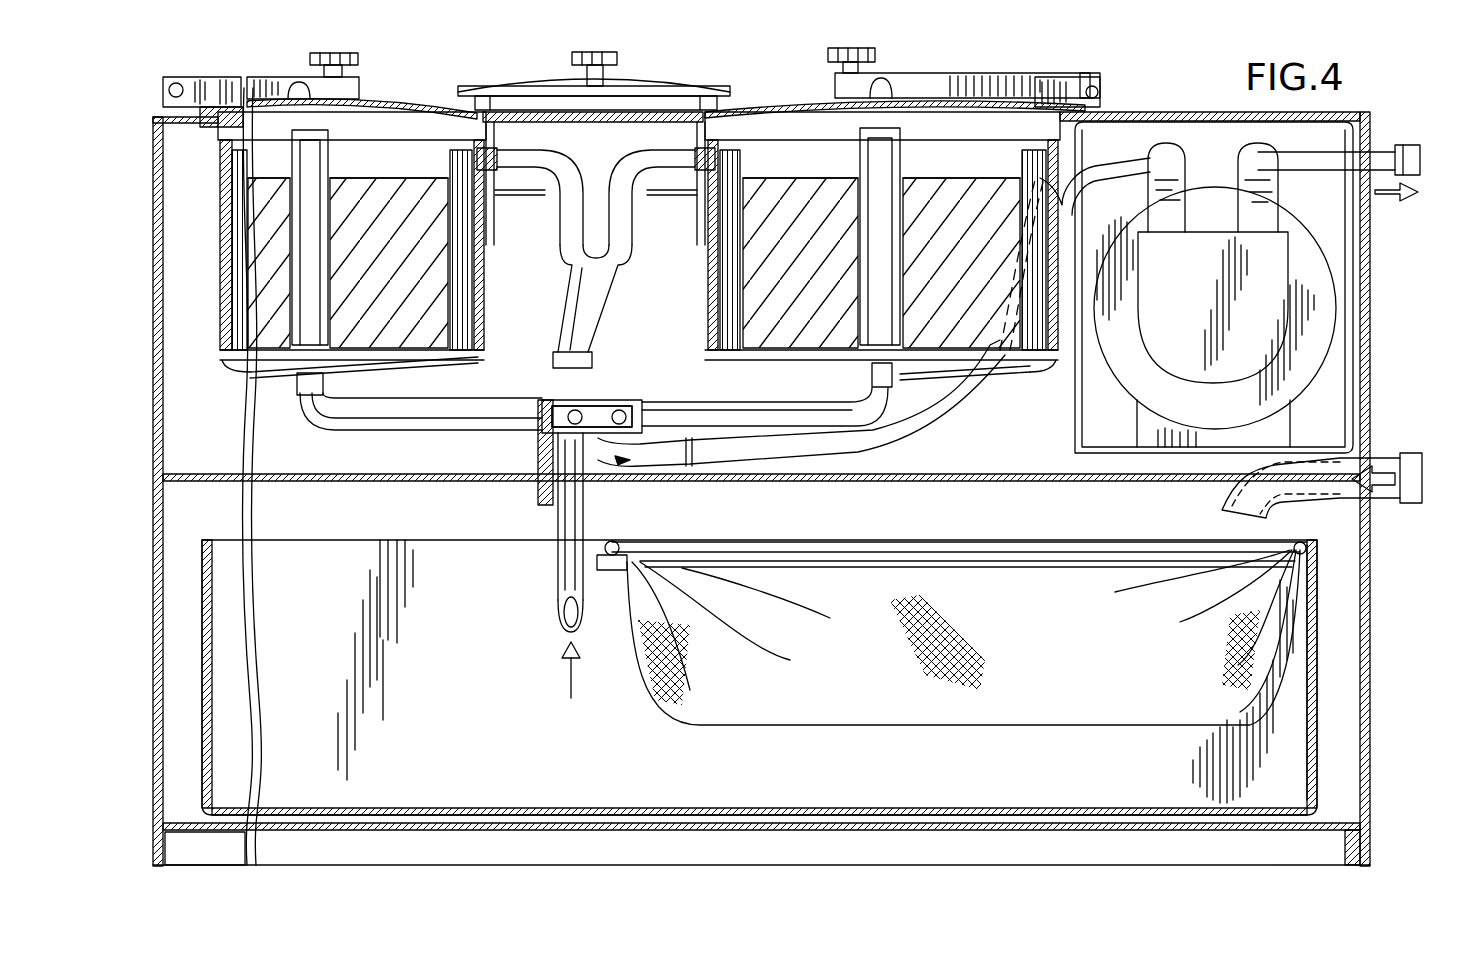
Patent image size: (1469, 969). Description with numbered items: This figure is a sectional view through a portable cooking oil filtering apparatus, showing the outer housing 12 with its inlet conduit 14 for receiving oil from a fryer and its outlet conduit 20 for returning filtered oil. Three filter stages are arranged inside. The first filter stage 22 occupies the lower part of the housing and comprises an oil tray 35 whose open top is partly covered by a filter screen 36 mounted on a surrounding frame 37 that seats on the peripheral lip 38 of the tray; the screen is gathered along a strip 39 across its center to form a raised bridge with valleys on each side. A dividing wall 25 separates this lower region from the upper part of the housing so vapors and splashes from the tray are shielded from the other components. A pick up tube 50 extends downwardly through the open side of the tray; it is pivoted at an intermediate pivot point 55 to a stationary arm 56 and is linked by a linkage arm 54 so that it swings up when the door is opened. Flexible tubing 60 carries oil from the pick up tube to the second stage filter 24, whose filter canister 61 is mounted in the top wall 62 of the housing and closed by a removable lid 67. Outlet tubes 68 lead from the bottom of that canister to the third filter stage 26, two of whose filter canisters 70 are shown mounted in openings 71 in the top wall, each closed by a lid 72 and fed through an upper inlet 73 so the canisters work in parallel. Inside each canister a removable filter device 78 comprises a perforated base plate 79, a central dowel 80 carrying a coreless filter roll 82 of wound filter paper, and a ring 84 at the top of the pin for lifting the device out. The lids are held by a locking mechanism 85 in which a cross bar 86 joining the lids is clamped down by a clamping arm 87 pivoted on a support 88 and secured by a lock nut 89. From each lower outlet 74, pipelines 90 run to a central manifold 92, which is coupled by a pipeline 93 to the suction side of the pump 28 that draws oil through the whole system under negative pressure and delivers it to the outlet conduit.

The outer housing 12 is at (1364, 255).
The inlet conduit 14 is at (1383, 456).
The outlet conduit 20 is at (1406, 145).
The first filter stage 22 is at (1285, 676).
The second stage filter 24 is at (526, 84).
The dividing wall 25 is at (898, 480).
The third filter stage 26 is at (486, 295).
The pump 28 is at (1124, 378).
The oil tray 35 is at (1317, 705).
The filter screen 36 is at (1006, 722).
The frame 37 is at (625, 546).
The peripheral lip 38 is at (618, 572).
The strip 39 is at (988, 548).
The pick up tube 50 is at (558, 552).
The linkage arm 54 is at (587, 368).
The pivot point 55 is at (578, 487).
The stationary arm 56 is at (542, 428).
The flexible tubing 60 is at (598, 277).
The filter canister 61 is at (528, 182).
The top wall 62 is at (1188, 112).
The lid 67 is at (655, 88).
The outlet tubes 68 is at (572, 232).
The filter canister 70 is at (484, 265).
The opening 71 is at (482, 121).
The lid 72 is at (376, 102).
The inlet 73 is at (518, 147).
The outlet 74 is at (297, 386).
The filter device 78 is at (390, 180).
The base plate 79 is at (388, 360).
The dowel 80 is at (922, 182).
The filter roll 82 is at (480, 352).
The ring 84 is at (862, 138).
The locking mechanism 85 is at (245, 78).
The cross bar 86 is at (893, 80).
The clamping arm 87 is at (957, 78).
The support 88 is at (1090, 78).
The lock nut 89 is at (828, 56).
The pipelines 90 is at (398, 425).
The manifold 92 is at (602, 400).
The pipeline 93 is at (955, 402).